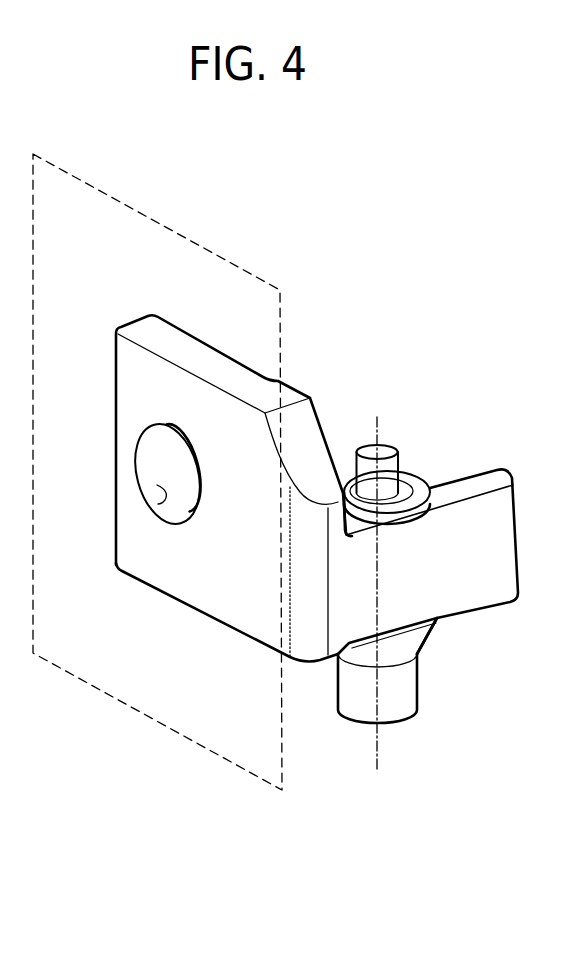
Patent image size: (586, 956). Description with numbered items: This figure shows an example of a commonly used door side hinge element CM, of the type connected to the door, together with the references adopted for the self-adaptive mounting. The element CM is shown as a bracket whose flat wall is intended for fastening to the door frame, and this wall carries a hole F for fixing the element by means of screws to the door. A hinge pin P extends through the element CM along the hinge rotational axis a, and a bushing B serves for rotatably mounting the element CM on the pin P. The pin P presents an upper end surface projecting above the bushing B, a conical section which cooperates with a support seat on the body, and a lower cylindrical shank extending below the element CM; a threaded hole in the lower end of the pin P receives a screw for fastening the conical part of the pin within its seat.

The door side hinge element CM is at (375, 319).
The hole F is at (158, 504).
The bushing B is at (420, 497).
The hinge rotational axis a is at (378, 430).
The hinge pin P is at (330, 702).